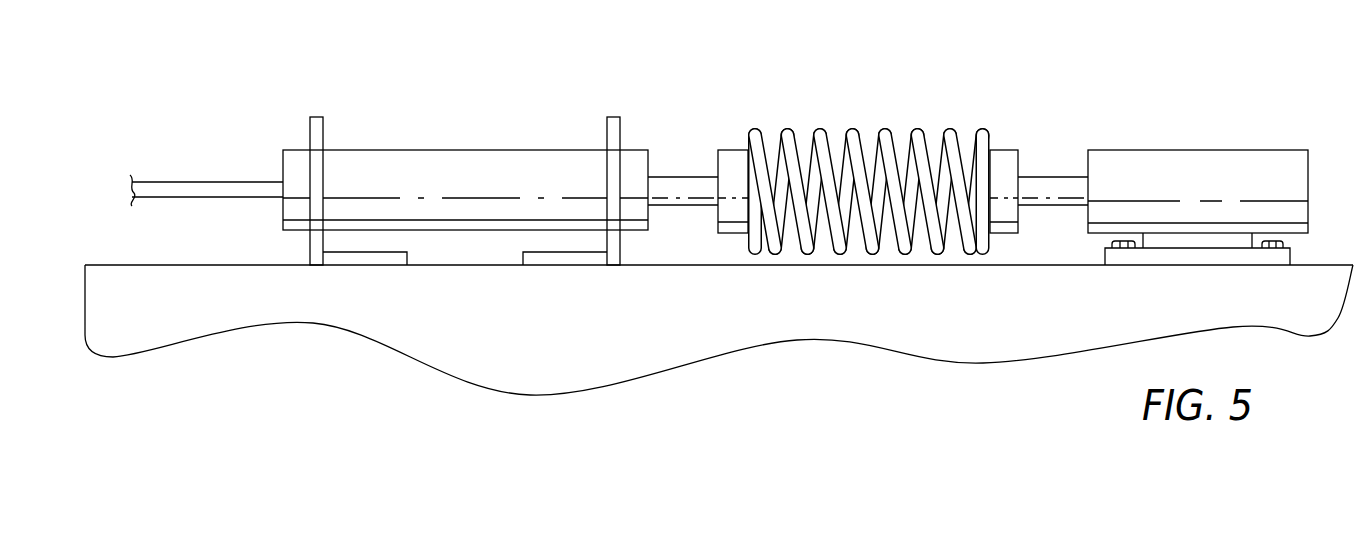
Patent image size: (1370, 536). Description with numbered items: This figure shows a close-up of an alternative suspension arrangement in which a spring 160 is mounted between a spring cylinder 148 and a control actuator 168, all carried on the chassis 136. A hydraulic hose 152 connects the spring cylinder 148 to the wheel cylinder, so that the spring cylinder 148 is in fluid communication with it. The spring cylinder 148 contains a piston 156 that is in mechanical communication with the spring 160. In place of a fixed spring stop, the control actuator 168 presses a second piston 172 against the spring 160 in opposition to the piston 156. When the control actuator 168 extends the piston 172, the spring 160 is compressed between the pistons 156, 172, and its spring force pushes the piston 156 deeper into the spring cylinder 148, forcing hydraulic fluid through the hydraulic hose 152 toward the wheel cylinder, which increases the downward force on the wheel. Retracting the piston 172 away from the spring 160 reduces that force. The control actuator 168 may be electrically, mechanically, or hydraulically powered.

The chassis 136 is at (710, 323).
The spring cylinder 148 is at (468, 150).
The hydraulic hose 152 is at (208, 182).
The piston 156 is at (732, 150).
The spring 160 is at (850, 128).
The control actuator 168 is at (1213, 150).
The piston 172 is at (1005, 150).